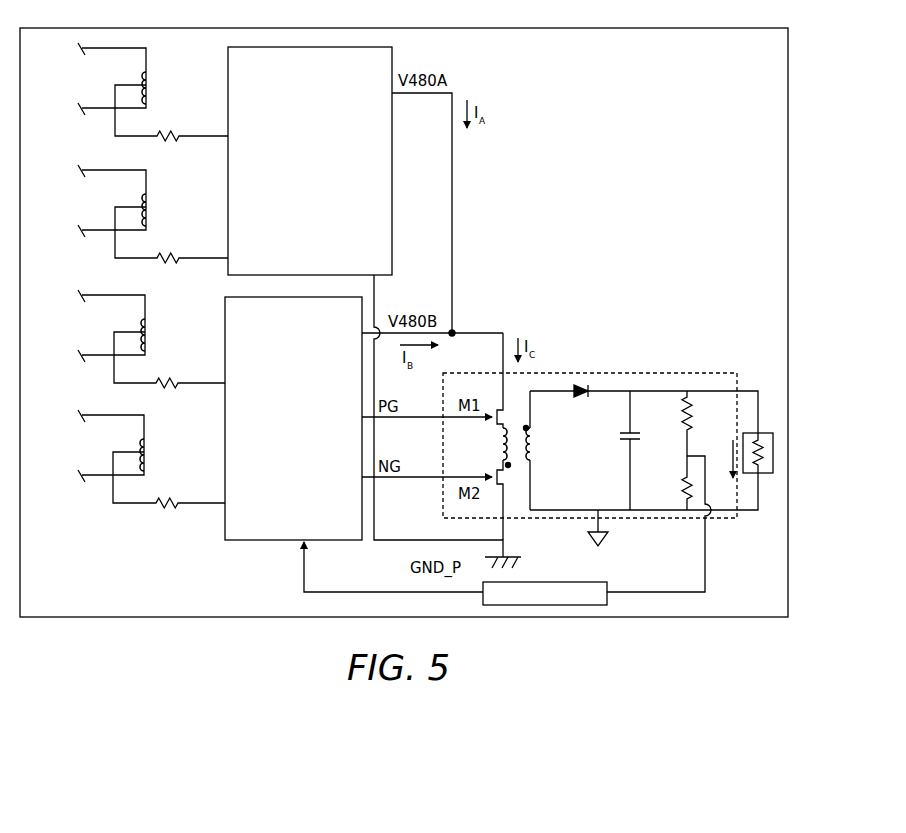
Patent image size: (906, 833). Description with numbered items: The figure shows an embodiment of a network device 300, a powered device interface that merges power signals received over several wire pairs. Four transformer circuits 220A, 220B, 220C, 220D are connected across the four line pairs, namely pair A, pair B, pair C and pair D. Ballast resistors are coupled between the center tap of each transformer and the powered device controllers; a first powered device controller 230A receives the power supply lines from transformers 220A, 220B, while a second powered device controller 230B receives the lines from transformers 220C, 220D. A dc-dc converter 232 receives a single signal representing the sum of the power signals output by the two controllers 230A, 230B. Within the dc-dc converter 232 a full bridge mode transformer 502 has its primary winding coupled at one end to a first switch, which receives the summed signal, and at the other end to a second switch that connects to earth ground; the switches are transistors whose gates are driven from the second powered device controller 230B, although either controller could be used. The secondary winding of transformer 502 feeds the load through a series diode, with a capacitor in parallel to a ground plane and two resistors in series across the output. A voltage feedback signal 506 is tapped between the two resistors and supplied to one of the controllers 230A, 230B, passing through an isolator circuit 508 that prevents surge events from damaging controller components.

The network device 300 is at (404, 322).
The transformer circuit 220A is at (150, 90).
The transformer circuit 220B is at (150, 212).
The transformer circuit 220C is at (149, 337).
The transformer circuit 220D is at (148, 457).
The first powered device controller 230A is at (310, 161).
The second powered device controller 230B is at (293, 418).
The dc-dc converter 232 is at (668, 373).
The full bridge mode transformer 502 is at (518, 447).
The voltage feedback signal 506 is at (708, 590).
The isolator circuit 508 is at (612, 600).